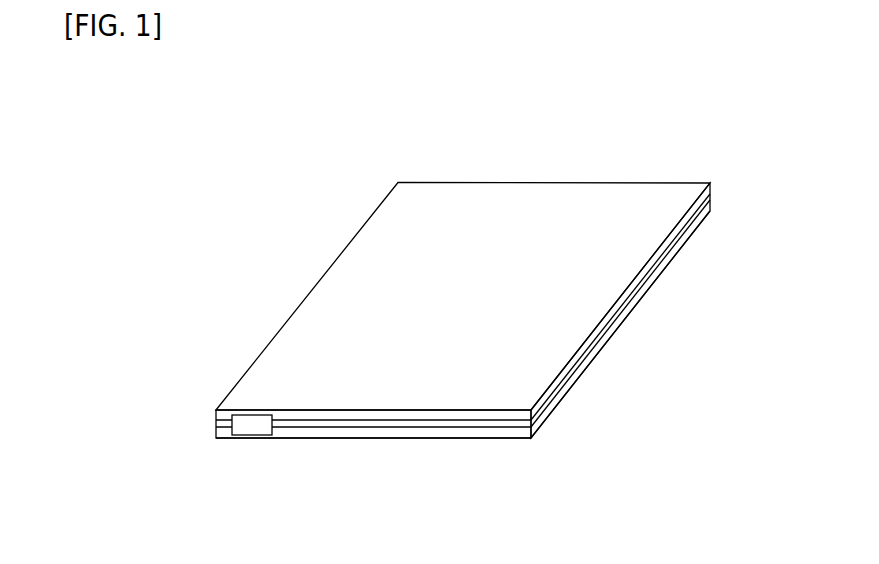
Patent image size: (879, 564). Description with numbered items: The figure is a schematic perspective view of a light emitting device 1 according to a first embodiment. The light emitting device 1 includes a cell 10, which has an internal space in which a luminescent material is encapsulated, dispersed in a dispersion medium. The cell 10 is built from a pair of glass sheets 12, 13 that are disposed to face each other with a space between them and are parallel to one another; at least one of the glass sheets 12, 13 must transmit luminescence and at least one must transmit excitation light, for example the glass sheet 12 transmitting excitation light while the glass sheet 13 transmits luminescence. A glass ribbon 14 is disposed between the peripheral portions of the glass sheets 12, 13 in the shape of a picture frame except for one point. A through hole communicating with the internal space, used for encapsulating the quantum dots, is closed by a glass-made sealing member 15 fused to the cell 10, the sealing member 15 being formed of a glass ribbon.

The light emitting device 1 is at (490, 282).
The cell 10 is at (529, 181).
The glass sheet 12 is at (652, 229).
The glass sheet 13 is at (663, 275).
The glass ribbon 14 is at (613, 322).
The sealing member 15 is at (252, 427).